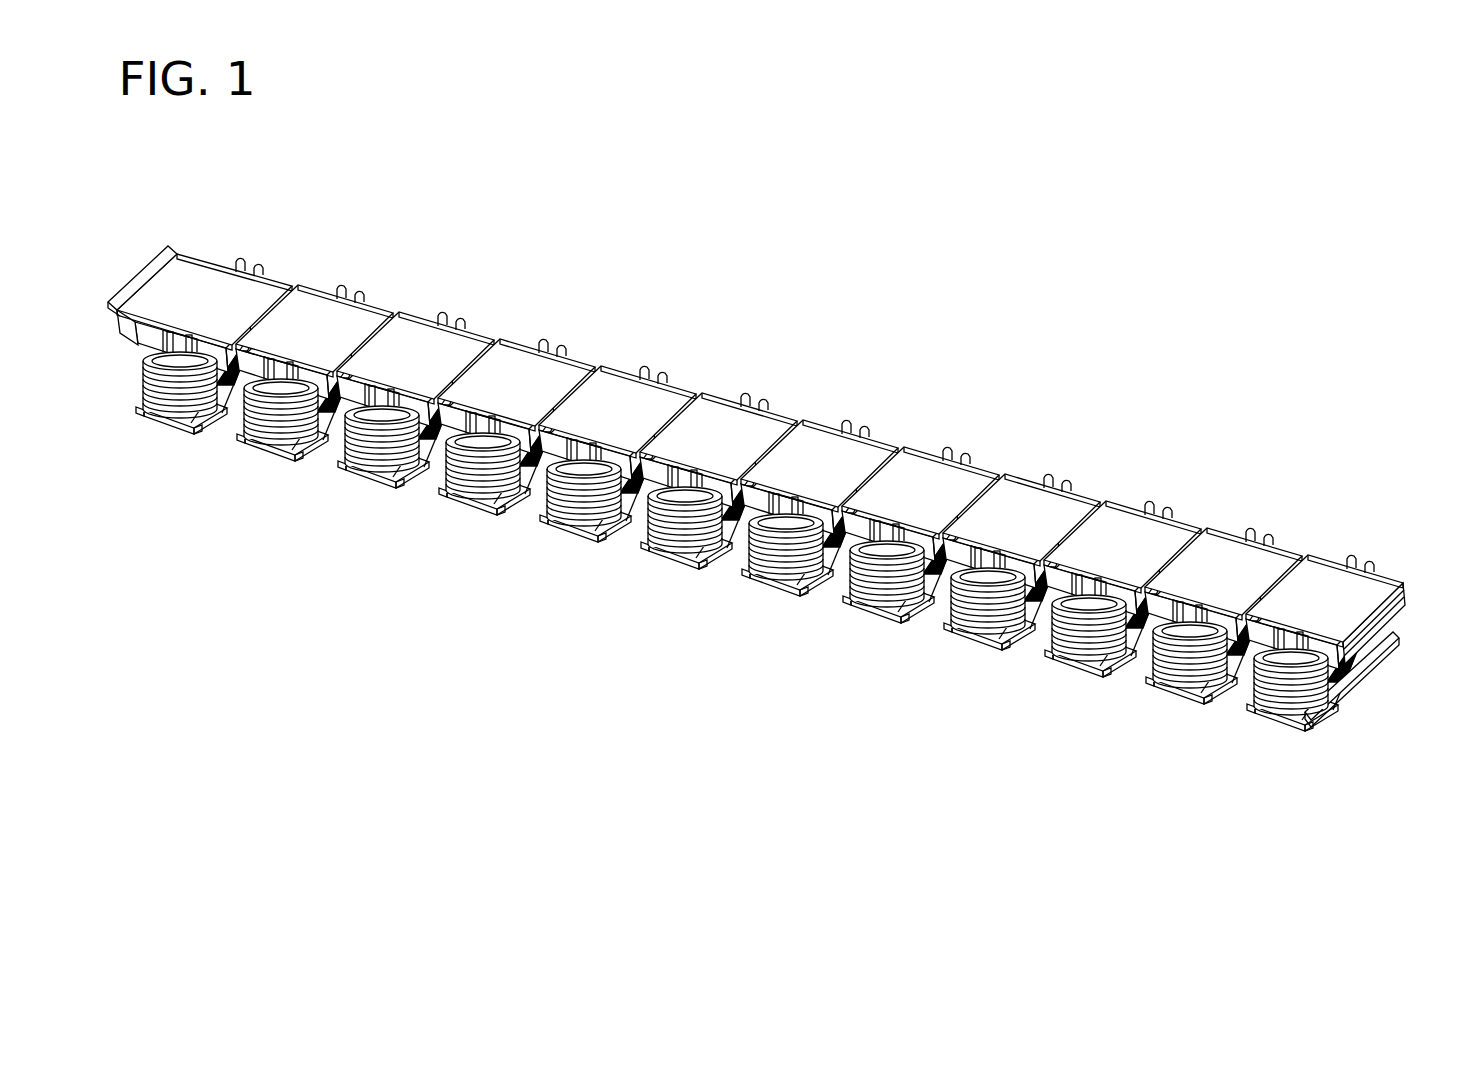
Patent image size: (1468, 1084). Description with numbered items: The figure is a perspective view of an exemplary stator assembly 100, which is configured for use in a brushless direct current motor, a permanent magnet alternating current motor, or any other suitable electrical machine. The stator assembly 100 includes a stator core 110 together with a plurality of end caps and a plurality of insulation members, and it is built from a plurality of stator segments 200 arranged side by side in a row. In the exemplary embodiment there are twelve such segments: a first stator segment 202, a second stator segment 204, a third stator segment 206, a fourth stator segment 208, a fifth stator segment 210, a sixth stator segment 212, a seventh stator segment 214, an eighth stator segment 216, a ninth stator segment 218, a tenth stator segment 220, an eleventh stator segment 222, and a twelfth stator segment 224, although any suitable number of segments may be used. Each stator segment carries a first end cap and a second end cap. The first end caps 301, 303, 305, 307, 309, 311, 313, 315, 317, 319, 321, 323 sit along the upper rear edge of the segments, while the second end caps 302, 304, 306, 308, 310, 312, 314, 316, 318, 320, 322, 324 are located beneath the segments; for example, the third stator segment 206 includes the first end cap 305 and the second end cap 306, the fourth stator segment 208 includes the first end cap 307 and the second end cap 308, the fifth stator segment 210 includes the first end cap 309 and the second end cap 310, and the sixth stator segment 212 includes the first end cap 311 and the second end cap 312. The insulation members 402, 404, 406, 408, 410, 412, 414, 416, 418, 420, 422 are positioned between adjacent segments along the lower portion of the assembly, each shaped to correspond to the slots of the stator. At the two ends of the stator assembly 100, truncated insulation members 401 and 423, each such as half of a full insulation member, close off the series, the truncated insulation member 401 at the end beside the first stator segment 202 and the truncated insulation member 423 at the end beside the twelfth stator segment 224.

The stator assembly 100 is at (1092, 299).
The stator core 110 is at (165, 298).
The stator segments 200 is at (690, 368).
The first stator segment 202 is at (193, 283).
The second stator segment 204 is at (300, 305).
The third stator segment 206 is at (400, 338).
The fourth stator segment 208 is at (500, 362).
The fifth stator segment 210 is at (600, 388).
The sixth stator segment 212 is at (753, 435).
The seventh stator segment 214 is at (802, 450).
The eighth stator segment 216 is at (900, 475).
The ninth stator segment 218 is at (1000, 500).
The tenth stator segment 220 is at (1105, 525).
The eleventh stator segment 222 is at (1205, 555).
The twelfth stator segment 224 is at (1310, 580).
The first end cap 301 is at (288, 283).
The first end cap 303 is at (389, 310).
The first end cap 305 is at (490, 337).
The first end cap 307 is at (591, 364).
The first end cap 309 is at (692, 391).
The first end cap 311 is at (795, 418).
The first end cap 313 is at (895, 445).
The first end cap 315 is at (996, 472).
The first end cap 317 is at (1097, 499).
The first end cap 319 is at (1198, 526).
The first end cap 321 is at (1299, 553).
The first end cap 323 is at (1400, 580).
The second end cap 302 is at (212, 352).
The second end cap 304 is at (313, 379).
The second end cap 306 is at (414, 406).
The second end cap 308 is at (515, 433).
The second end cap 310 is at (616, 460).
The second end cap 312 is at (717, 487).
The second end cap 314 is at (818, 514).
The second end cap 316 is at (919, 541).
The second end cap 318 is at (1020, 568).
The second end cap 320 is at (1121, 595).
The second end cap 322 is at (1222, 622).
The second end cap 324 is at (1323, 649).
The truncated insulation member 401 is at (133, 346).
The insulation member 402 is at (230, 372).
The insulation member 404 is at (331, 399).
The insulation member 406 is at (432, 426).
The insulation member 408 is at (533, 453).
The insulation member 410 is at (634, 480).
The insulation member 412 is at (735, 507).
The insulation member 414 is at (836, 534).
The insulation member 416 is at (937, 561).
The insulation member 418 is at (1038, 588).
The insulation member 420 is at (1139, 615).
The insulation member 422 is at (1240, 642).
The truncated insulation member 423 is at (1365, 655).